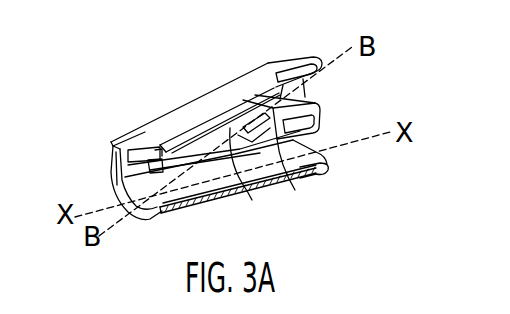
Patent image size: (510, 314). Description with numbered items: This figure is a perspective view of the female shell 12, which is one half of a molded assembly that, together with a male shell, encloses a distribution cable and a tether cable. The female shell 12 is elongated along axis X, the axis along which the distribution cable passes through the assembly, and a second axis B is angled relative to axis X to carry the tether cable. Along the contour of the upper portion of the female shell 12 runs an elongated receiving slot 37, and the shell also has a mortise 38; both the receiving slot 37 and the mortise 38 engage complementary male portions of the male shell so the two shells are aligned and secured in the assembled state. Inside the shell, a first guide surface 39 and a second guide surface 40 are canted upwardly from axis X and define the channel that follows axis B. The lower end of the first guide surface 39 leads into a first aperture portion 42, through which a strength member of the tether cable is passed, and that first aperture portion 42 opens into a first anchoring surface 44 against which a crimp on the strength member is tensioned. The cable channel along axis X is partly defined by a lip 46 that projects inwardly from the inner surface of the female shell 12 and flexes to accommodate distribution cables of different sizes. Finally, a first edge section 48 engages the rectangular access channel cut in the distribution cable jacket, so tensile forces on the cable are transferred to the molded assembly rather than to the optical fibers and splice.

The female shell 12 is at (178, 107).
The receiving slot 37 is at (237, 93).
The mortise 38 is at (320, 120).
The first guide surface 39 is at (242, 183).
The second guide surface 40 is at (295, 190).
The first aperture portion 42 is at (152, 150).
The first anchoring surface 44 is at (111, 175).
The lip 46 is at (323, 167).
The first edge section 48 is at (300, 178).